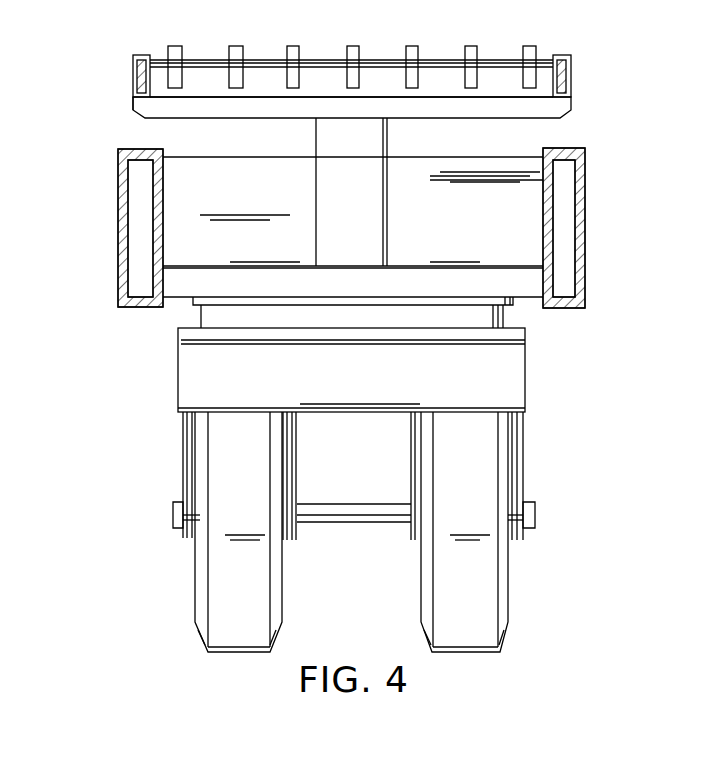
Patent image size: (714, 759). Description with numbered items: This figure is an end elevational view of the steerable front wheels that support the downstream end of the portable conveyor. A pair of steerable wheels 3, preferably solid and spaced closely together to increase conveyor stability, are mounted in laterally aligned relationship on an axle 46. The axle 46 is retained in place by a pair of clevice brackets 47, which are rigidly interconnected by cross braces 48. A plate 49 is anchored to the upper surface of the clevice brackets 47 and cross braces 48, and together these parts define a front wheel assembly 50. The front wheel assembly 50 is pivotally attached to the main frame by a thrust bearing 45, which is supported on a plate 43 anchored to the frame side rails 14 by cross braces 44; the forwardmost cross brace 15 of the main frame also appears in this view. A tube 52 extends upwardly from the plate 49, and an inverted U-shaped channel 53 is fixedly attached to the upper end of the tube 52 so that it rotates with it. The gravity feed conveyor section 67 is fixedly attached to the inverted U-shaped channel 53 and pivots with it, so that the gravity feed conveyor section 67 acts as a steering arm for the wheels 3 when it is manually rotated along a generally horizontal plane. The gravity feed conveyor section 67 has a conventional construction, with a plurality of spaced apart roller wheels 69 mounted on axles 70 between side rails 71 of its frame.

The steerable wheels 3 is at (218, 582).
The frame side rails 14 is at (120, 219).
The forwardmost cross brace 15 is at (490, 167).
The plate 43 is at (283, 297).
The cross braces 44 is at (450, 270).
The thrust bearing 45 is at (492, 320).
The axle 46 is at (377, 500).
The clevice brackets 47 is at (185, 452).
The cross braces 48 is at (513, 392).
The plate 49 is at (190, 328).
The front wheel assembly 50 is at (178, 374).
The tube 52 is at (376, 144).
The inverted U-shaped channel 53 is at (300, 117).
The gravity feed conveyor section 67 is at (133, 88).
The roller wheels 69 is at (240, 47).
The axles 70 is at (374, 60).
The side rails 71 is at (133, 62).